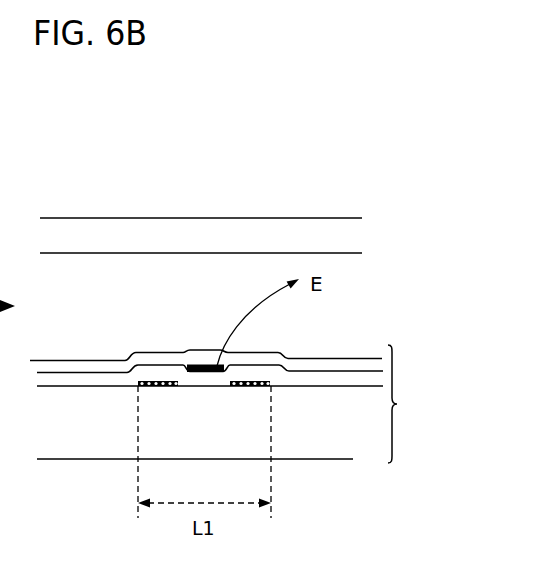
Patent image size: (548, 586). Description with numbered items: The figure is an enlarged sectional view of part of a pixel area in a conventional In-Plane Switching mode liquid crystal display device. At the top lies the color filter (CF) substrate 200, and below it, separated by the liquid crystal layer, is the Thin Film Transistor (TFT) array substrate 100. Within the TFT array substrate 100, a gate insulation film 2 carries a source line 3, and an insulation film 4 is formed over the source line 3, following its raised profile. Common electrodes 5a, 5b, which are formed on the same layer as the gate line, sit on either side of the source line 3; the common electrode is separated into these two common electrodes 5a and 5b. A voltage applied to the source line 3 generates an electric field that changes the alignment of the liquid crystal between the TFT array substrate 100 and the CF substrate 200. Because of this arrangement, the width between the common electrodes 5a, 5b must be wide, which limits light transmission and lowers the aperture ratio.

The color filter (CF) substrate 200 is at (352, 240).
The Thin Film Transistor (TFT) array substrate 100 is at (239, 404).
The insulation film 4 is at (50, 370).
The source line 3 is at (195, 366).
The gate insulation film 2 is at (48, 379).
The common electrode 5a is at (136, 387).
The common electrode 5b is at (272, 388).